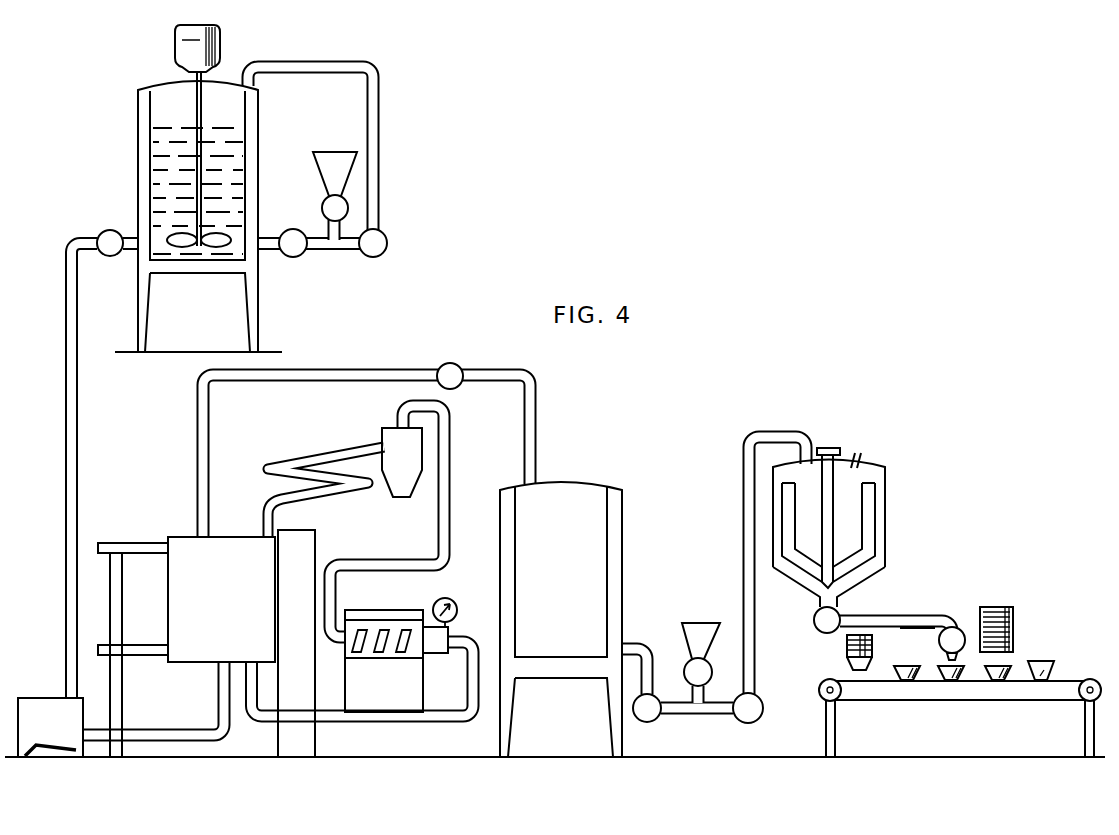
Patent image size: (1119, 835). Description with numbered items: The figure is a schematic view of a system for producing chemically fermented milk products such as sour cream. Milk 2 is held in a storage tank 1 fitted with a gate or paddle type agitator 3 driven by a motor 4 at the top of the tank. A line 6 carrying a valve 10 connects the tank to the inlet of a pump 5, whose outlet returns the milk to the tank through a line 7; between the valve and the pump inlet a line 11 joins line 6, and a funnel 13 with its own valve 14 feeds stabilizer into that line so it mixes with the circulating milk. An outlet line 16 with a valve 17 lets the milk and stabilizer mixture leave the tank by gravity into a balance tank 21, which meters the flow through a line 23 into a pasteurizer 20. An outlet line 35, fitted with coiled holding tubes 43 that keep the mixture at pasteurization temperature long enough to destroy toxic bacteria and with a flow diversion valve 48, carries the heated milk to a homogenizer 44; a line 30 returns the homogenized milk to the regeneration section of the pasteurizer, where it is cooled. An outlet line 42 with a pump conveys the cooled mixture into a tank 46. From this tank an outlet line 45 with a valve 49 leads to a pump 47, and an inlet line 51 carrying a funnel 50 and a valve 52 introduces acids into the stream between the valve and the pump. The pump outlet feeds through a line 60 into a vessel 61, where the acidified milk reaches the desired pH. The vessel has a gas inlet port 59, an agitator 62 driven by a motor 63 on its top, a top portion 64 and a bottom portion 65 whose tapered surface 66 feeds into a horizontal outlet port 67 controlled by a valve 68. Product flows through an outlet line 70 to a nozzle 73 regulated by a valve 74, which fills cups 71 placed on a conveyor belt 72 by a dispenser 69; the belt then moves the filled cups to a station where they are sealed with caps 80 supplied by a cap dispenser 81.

The storage tank 1 is at (147, 113).
The milk 2 is at (172, 177).
The agitator 3 is at (218, 246).
The motor 4 is at (171, 48).
The pump 5 is at (388, 246).
The line 6 is at (361, 250).
The line 7 is at (374, 125).
The valve 10 is at (302, 255).
The line 11 is at (352, 227).
The funnel 13 is at (327, 162).
The valve 14 is at (322, 208).
The outlet line 16 is at (70, 378).
The valve 17 is at (104, 232).
The pasteurizer 20 is at (182, 612).
The balance tank 21 is at (33, 710).
The line 23 is at (162, 737).
The line 30 is at (478, 705).
The outlet line 35 is at (272, 490).
The outlet line 42 is at (360, 371).
The coiled holding tubes 43 is at (346, 433).
The homogenizer 44 is at (412, 682).
The outlet line 45 is at (645, 642).
The tank 46 is at (587, 497).
The pump 47 is at (763, 706).
The flow diversion valve 48 is at (406, 480).
The valve 49 is at (652, 715).
The funnel 50 is at (690, 630).
The inlet line 51 is at (716, 694).
The valve 52 is at (713, 673).
The gas inlet port 59 is at (862, 456).
The line 60 is at (746, 488).
The vessel 61 is at (886, 470).
The agitator 62 is at (796, 576).
The motor 63 is at (831, 447).
The top portion 64 is at (886, 507).
The bottom portion 65 is at (880, 572).
The surface 66 is at (816, 612).
The outlet port 67 is at (840, 600).
The valve 68 is at (843, 655).
The dispenser 69 is at (873, 670).
The outlet line 70 is at (925, 623).
The cups 71 is at (918, 648).
The conveyor belt 72 is at (918, 701).
The nozzle 73 is at (953, 658).
The valve 74 is at (956, 625).
The caps 80 is at (1015, 637).
The cap dispenser 81 is at (1014, 622).